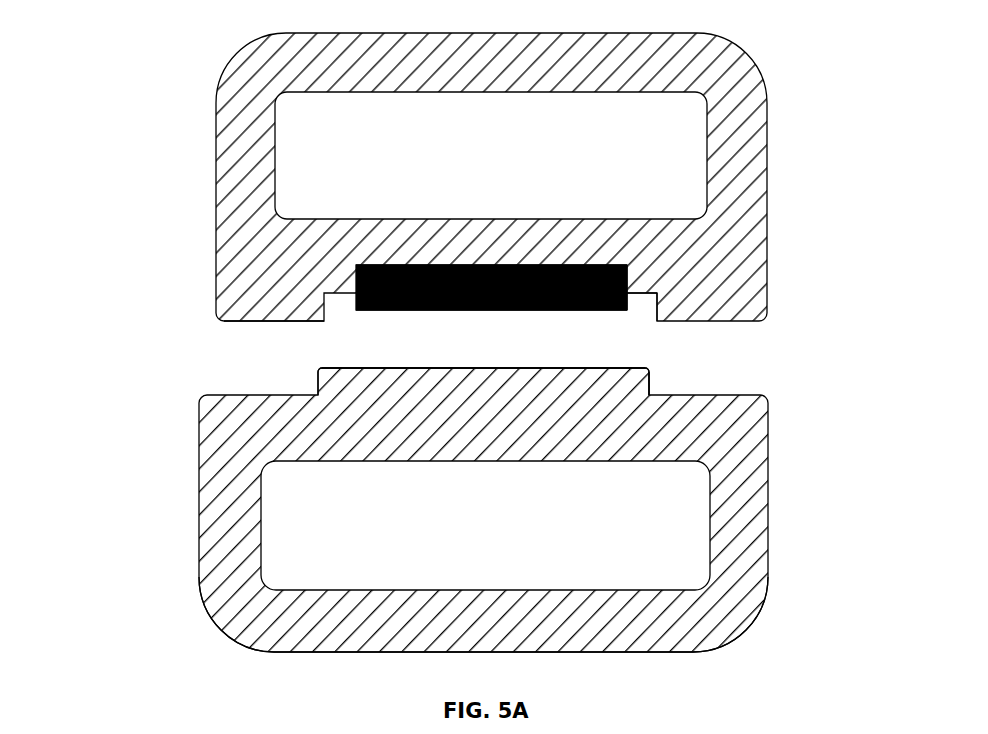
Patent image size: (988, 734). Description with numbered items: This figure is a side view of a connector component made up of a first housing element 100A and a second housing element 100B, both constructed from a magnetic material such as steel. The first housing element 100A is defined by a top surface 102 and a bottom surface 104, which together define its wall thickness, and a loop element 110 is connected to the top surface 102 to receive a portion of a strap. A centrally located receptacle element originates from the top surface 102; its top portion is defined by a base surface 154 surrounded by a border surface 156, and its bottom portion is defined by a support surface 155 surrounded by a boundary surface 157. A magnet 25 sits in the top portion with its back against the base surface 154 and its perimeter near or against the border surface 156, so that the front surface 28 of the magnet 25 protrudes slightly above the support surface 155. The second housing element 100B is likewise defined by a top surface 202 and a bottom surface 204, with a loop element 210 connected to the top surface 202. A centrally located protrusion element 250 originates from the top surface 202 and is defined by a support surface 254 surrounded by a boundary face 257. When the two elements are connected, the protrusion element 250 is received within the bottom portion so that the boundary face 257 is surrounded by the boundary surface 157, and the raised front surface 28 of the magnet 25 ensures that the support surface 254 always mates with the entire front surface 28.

The first housing element 100A is at (118, 60).
The loop element 110 is at (653, 57).
The top surface 102 is at (315, 213).
The magnet 25 is at (354, 278).
The base surface 154 is at (545, 262).
The border surface 156 is at (627, 273).
The support surface 155 is at (641, 292).
The boundary surface 157 is at (660, 309).
The bottom surface 104 is at (214, 322).
The front surface 28 is at (450, 310).
The second housing element 100B is at (116, 472).
The bottom surface 204 is at (713, 397).
The top surface 202 is at (435, 462).
The protrusion element 250 is at (320, 369).
The support surface 254 is at (606, 365).
The boundary face 257 is at (651, 393).
The loop element 210 is at (350, 607).